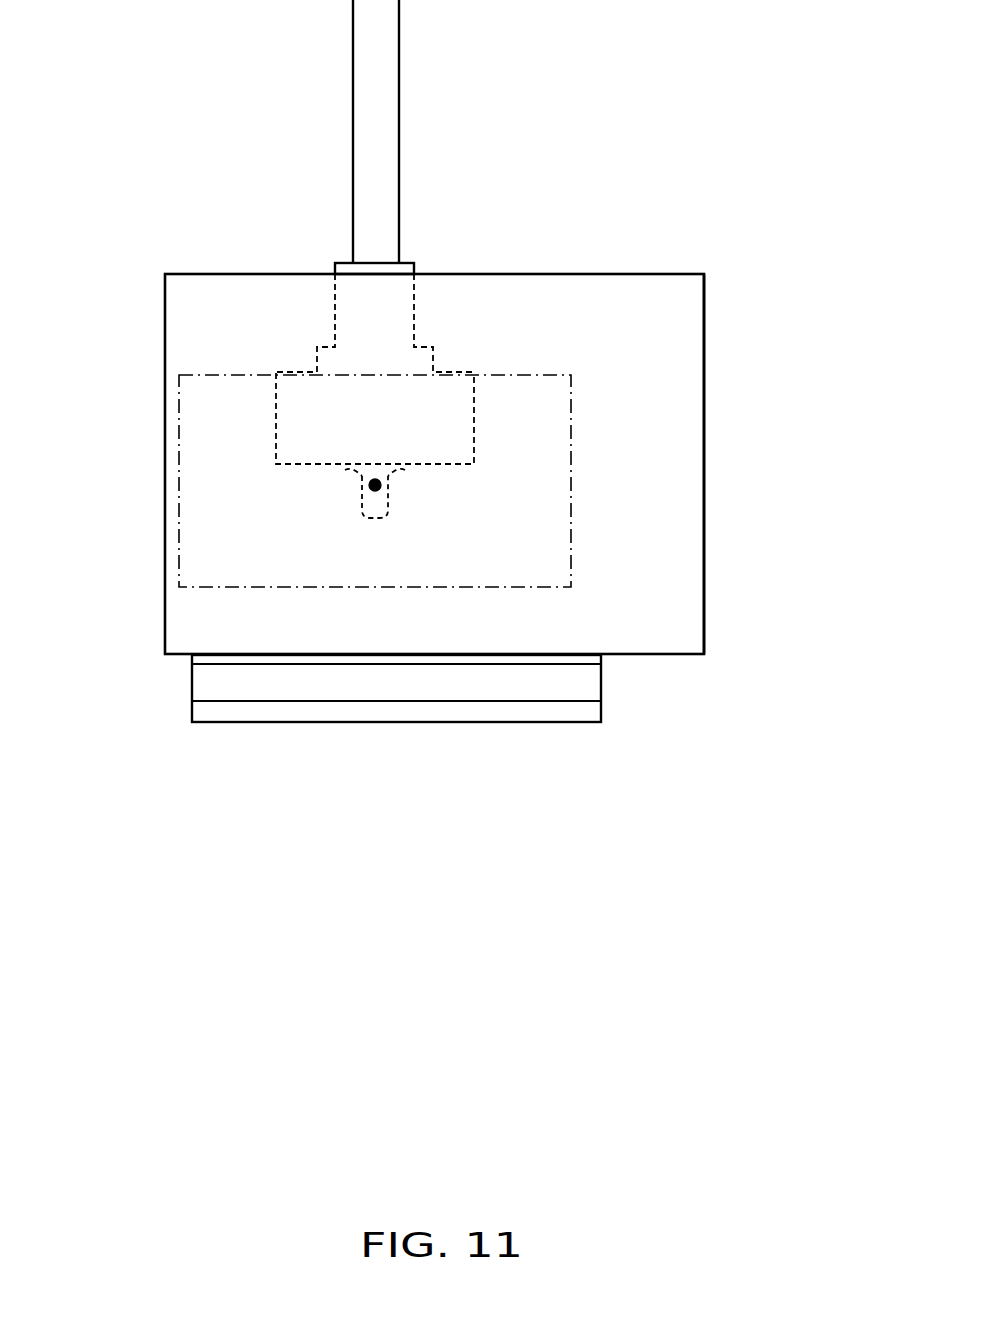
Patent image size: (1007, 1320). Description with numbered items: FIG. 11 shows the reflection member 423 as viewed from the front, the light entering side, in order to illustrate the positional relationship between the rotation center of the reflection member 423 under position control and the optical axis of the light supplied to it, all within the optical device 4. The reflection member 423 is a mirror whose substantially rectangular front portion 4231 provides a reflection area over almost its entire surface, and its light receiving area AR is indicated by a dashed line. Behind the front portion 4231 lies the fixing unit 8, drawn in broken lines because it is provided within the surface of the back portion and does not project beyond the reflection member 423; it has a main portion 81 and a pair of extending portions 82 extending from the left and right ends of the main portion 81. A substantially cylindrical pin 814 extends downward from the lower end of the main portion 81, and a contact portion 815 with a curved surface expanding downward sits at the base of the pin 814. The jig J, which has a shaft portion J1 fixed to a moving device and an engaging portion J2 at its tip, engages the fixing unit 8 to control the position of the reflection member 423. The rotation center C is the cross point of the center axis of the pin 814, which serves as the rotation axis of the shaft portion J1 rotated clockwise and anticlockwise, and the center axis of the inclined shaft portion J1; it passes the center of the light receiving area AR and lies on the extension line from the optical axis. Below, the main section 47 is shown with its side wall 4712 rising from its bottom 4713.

The robot / manipulator unit 4 is at (663, 118).
The jig J is at (478, 160).
The shaft portion J1 is at (378, 188).
The engaging portion J2 is at (405, 270).
The reflection member 423 is at (652, 273).
The front portion 4231 is at (692, 313).
The light receiving area AR is at (572, 482).
The fixing unit 8 is at (290, 373).
The main portion 81 is at (415, 363).
The extending portions 82 is at (284, 427).
The pin 814 is at (388, 512).
The contact portion 815 is at (358, 470).
The rotation center C is at (378, 488).
The holding plate (471) 47 is at (192, 680).
The side wall 4712 is at (600, 663).
The bottom 4713 is at (565, 713).